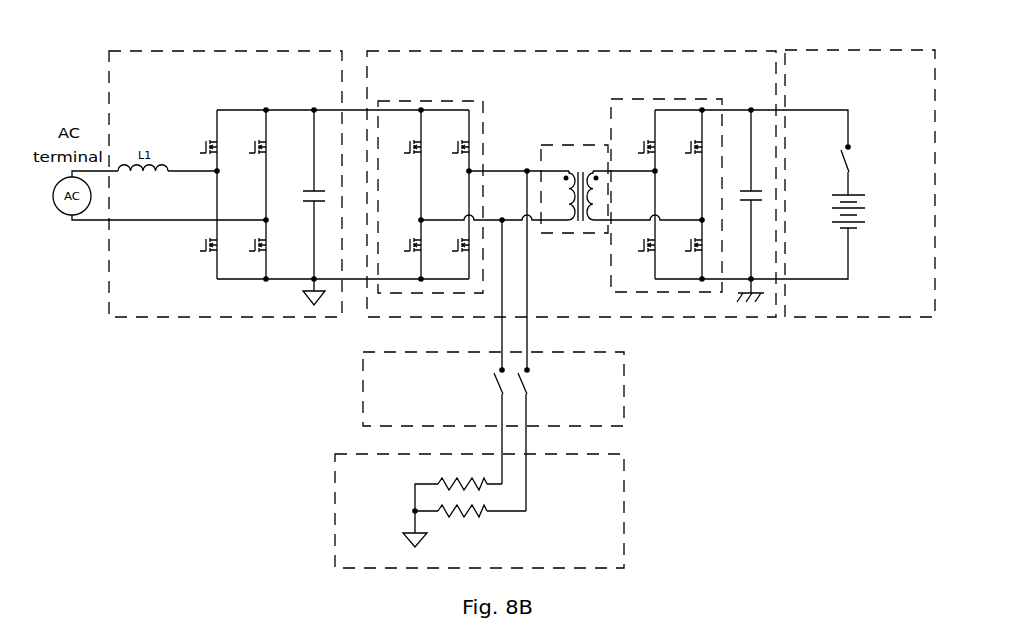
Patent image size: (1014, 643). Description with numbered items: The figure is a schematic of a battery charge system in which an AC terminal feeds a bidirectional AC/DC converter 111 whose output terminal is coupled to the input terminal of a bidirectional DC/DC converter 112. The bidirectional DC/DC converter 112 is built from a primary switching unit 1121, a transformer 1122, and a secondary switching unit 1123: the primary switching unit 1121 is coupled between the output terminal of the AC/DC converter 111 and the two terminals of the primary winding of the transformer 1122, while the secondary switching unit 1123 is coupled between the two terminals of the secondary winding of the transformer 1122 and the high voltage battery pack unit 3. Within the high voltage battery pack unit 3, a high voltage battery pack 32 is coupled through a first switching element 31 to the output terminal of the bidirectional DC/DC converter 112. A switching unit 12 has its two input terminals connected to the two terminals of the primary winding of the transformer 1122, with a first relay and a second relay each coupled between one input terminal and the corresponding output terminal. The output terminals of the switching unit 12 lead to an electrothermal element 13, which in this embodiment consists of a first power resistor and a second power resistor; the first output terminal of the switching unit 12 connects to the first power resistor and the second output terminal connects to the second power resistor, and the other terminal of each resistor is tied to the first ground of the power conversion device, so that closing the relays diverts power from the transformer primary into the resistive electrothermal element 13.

The AC/DC converter 111 is at (262, 51).
The bidirectional DC/DC converter 112 is at (625, 50).
The primary switching unit 1121 is at (398, 101).
The transformer 1122 is at (548, 145).
The secondary switching unit 1123 is at (647, 99).
The high voltage battery pack unit 3 is at (837, 50).
The first switching element 31 is at (862, 162).
The high voltage battery pack 32 is at (865, 218).
The switching unit 12 is at (627, 377).
The electrothermal element 13 is at (625, 467).